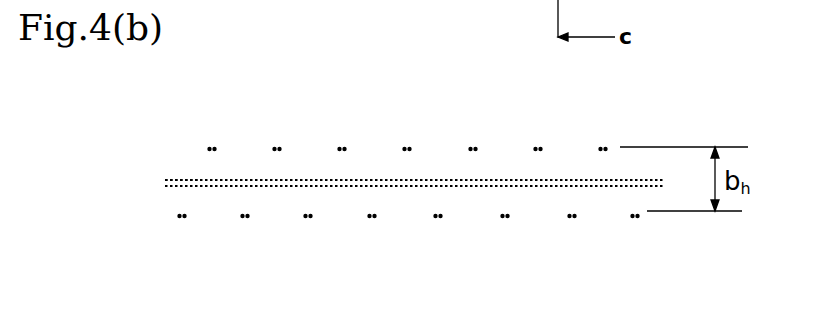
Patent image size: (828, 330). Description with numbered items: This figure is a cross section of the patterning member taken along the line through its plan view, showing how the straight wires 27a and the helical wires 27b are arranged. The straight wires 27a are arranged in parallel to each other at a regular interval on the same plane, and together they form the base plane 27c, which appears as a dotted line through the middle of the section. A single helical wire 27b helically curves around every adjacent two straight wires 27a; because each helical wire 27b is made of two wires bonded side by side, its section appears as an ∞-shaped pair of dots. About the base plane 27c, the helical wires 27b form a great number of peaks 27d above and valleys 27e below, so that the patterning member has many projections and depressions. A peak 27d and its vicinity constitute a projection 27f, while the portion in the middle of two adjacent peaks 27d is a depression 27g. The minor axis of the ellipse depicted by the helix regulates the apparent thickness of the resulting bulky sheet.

The straight wire 27a is at (176, 181).
The helical wire 27b is at (508, 218).
The plane 27c is at (188, 180).
The peak 27d is at (407, 145).
The valley 27e is at (307, 219).
The projection 27f is at (343, 136).
The depression 27g is at (440, 205).